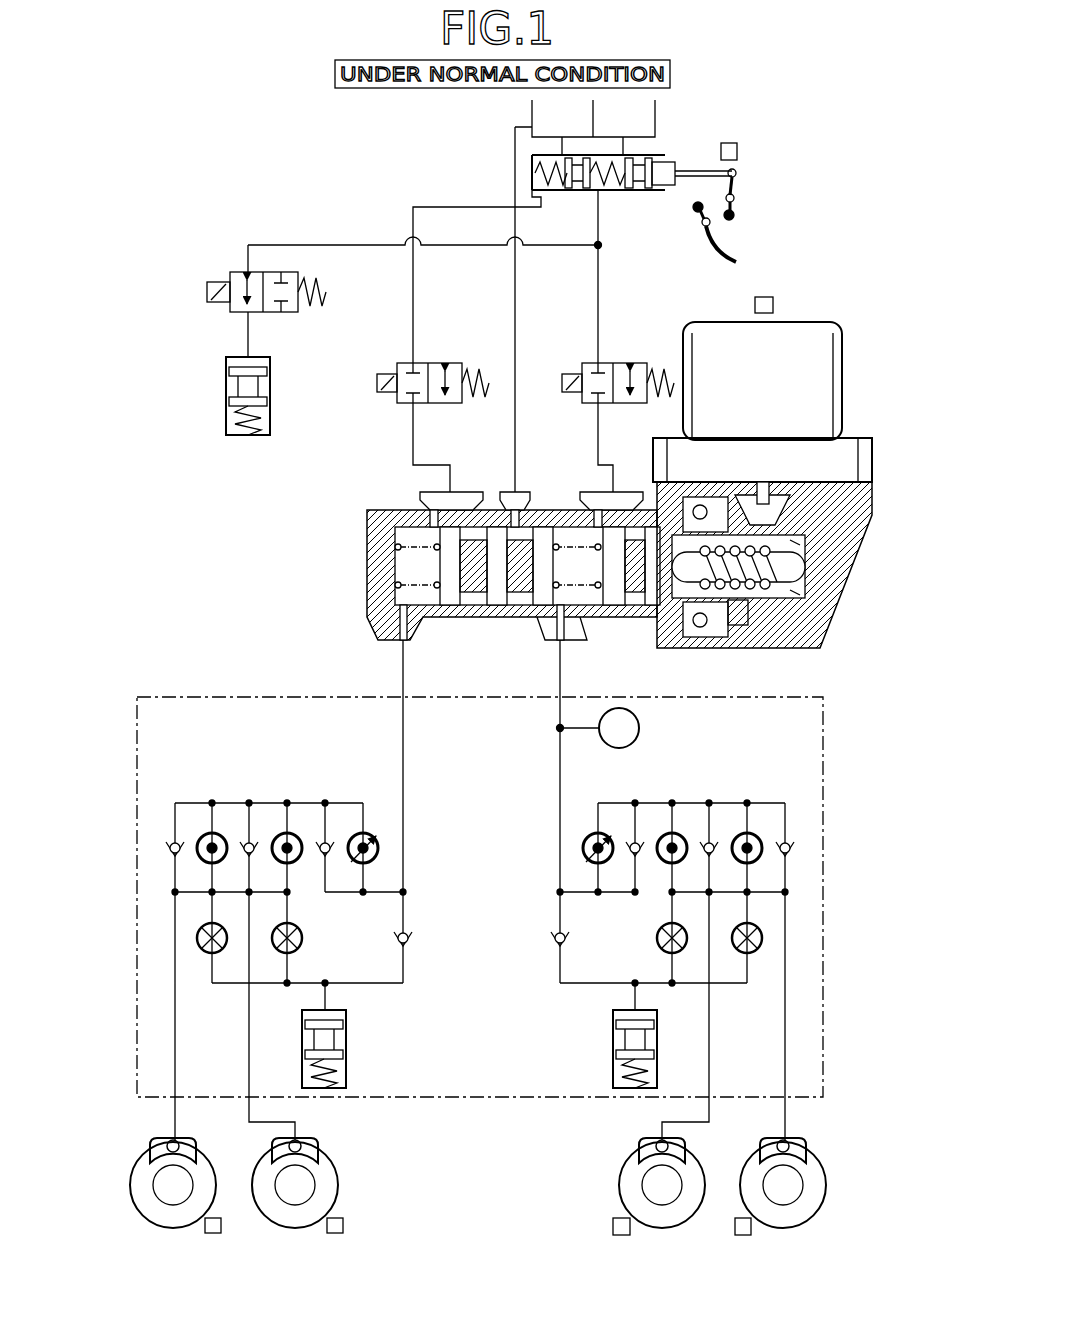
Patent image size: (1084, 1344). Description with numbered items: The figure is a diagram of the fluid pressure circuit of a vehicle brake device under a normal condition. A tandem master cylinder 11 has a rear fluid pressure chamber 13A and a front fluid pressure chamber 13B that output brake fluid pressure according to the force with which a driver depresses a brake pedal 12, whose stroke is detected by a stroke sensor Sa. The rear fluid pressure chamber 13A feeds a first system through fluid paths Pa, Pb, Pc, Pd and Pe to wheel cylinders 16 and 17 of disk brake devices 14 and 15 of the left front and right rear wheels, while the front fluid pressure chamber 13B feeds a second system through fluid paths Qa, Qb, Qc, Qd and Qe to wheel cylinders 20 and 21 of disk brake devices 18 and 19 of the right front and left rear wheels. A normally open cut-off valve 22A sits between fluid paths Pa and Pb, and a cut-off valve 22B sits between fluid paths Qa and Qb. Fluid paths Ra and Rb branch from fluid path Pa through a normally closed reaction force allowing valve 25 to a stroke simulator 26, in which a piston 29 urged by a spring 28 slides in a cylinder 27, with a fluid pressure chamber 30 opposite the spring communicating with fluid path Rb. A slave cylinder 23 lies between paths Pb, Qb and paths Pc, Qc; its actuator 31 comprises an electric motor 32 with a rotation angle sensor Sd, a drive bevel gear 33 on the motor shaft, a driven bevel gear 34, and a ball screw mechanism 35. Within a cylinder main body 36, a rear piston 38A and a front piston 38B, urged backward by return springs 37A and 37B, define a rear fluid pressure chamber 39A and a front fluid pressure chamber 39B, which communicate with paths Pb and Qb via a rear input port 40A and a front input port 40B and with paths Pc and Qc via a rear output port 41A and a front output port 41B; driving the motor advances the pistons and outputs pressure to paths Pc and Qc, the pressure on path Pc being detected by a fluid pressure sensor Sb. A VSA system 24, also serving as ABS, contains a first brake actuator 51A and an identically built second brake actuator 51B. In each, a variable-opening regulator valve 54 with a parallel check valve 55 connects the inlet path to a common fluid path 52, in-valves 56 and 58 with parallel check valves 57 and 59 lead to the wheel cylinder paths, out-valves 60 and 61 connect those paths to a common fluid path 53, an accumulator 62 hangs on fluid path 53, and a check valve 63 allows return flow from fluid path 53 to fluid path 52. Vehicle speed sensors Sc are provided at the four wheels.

The tandem master cylinder 11 is at (661, 139).
The brake pedal 12 is at (738, 254).
The rear fluid pressure chamber 13A is at (612, 190).
The front fluid pressure chamber 13B is at (557, 190).
The disk brake device 14 is at (617, 1172).
The disk brake device 15 is at (829, 1190).
The wheel cylinder 16 is at (655, 1143).
The wheel cylinder 17 is at (789, 1143).
The disk brake device 18 is at (341, 1190).
The disk brake device 19 is at (127, 1190).
The wheel cylinder 20 is at (299, 1145).
The wheel cylinder 21 is at (168, 1143).
The cut-off valve 22A is at (608, 361).
The cut-off valve 22B is at (424, 361).
The slave cylinder 23 is at (366, 506).
The VSA system 24 is at (204, 696).
The reaction force allowing valve 25 is at (236, 268).
The stroke simulator 26 is at (275, 380).
The cylinder 27 is at (271, 418).
The spring 28 is at (254, 422).
The piston 29 is at (243, 378).
The fluid pressure chamber 30 is at (262, 363).
The actuator 31 is at (784, 614).
The electric motor 32 is at (825, 368).
The drive bevel gear 33 is at (780, 500).
The driven bevel gear 34 is at (735, 618).
The ball screw mechanism 35 is at (718, 592).
The cylinder main body 36 is at (543, 495).
The return spring 37A is at (595, 590).
The return spring 37B is at (395, 590).
The rear piston 38A is at (635, 568).
The front piston 38B is at (472, 565).
The rear fluid pressure chamber 39A is at (578, 500).
The front fluid pressure chamber 39B is at (397, 547).
The rear input port 40A is at (595, 490).
The front input port 40B is at (430, 490).
The rear output port 41A is at (560, 645).
The front output port 41B is at (398, 645).
The first brake actuator 51A is at (799, 958).
The second brake actuator 51B is at (162, 958).
The fluid path 52 is at (243, 800).
The fluid path 53 is at (236, 988).
The regulator valve 54 is at (360, 832).
The check valve 55 is at (322, 838).
The in-valve 56 is at (210, 832).
The check valve 57 is at (170, 843).
The in-valve 58 is at (285, 832).
The check valve 59 is at (245, 838).
The out-valve 60 is at (204, 950).
The out-valve 61 is at (302, 946).
The accumulator 62 is at (347, 1068).
The check valve 63 is at (407, 938).
The stroke sensor Sa is at (737, 152).
The fluid pressure sensor Sb is at (640, 728).
The vehicle speed sensor Sc is at (222, 1233).
The rotation angle sensor Sd is at (773, 305).
The fluid path Pa is at (595, 340).
The fluid path Pb is at (599, 442).
The fluid path Pc is at (566, 676).
The fluid path Pd is at (712, 1108).
The fluid path Pe is at (788, 1115).
The fluid path Qa is at (408, 315).
The fluid path Qb is at (410, 420).
The fluid path Qc is at (406, 676).
The fluid path Qd is at (246, 1108).
The fluid path Qe is at (172, 1113).
The fluid path Ra is at (333, 243).
The fluid path Rb is at (243, 342).